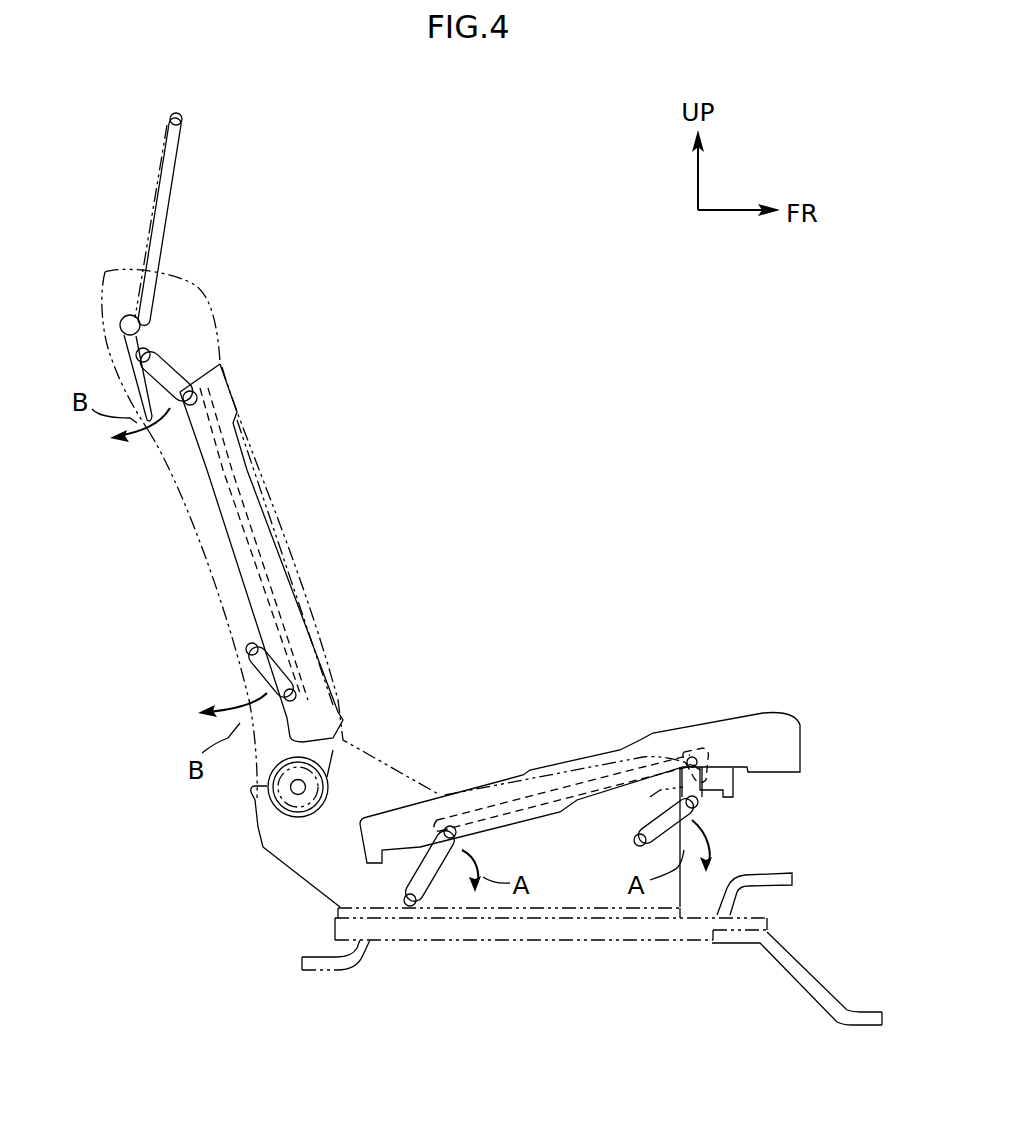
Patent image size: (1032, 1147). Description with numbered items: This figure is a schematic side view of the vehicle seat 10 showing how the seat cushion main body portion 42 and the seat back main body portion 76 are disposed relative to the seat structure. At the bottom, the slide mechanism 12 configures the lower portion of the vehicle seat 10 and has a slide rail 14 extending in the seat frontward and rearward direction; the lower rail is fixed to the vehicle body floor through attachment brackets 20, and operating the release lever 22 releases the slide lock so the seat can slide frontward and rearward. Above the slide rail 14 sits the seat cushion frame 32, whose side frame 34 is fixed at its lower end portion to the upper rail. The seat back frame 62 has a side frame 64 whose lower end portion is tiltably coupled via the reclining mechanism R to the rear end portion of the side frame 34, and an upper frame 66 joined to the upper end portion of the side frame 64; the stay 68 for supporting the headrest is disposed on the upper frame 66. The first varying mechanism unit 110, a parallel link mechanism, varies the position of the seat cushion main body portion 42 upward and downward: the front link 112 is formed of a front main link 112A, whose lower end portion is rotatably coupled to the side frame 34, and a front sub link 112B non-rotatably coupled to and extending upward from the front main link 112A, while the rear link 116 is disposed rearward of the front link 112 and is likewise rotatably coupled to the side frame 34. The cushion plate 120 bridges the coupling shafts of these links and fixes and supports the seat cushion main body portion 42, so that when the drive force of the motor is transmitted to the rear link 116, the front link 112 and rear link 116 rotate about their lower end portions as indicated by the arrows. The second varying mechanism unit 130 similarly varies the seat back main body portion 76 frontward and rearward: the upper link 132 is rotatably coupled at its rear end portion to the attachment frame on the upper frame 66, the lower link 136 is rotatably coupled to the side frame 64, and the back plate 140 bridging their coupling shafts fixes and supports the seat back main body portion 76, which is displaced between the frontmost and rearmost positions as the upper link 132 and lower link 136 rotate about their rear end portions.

The vehicle seat 10 is at (490, 313).
The slide mechanism 12 is at (556, 1005).
The slide rail 14 is at (678, 948).
The attachment bracket 20 is at (347, 963).
The release lever 22 is at (767, 885).
The seat cushion frame 32 is at (254, 852).
The side frame 34 is at (297, 880).
The seat cushion main body portion 42 is at (781, 705).
The seat back frame 62 is at (200, 545).
The side frame 64 is at (220, 593).
The upper frame 66 is at (118, 320).
The stay 68 is at (173, 188).
The seat back main body portion 76 is at (247, 467).
The first varying mechanism unit 110 is at (722, 817).
The front link 112 is at (704, 817).
The front main link 112A is at (643, 818).
The front sub link 112B is at (713, 770).
The rear link 116 is at (415, 884).
The cushion plate 120 is at (553, 773).
The second varying mechanism unit 130 is at (152, 460).
The upper link 132 is at (172, 366).
The lower link 136 is at (257, 670).
The back plate 140 is at (253, 525).
The reclining mechanism R is at (258, 802).